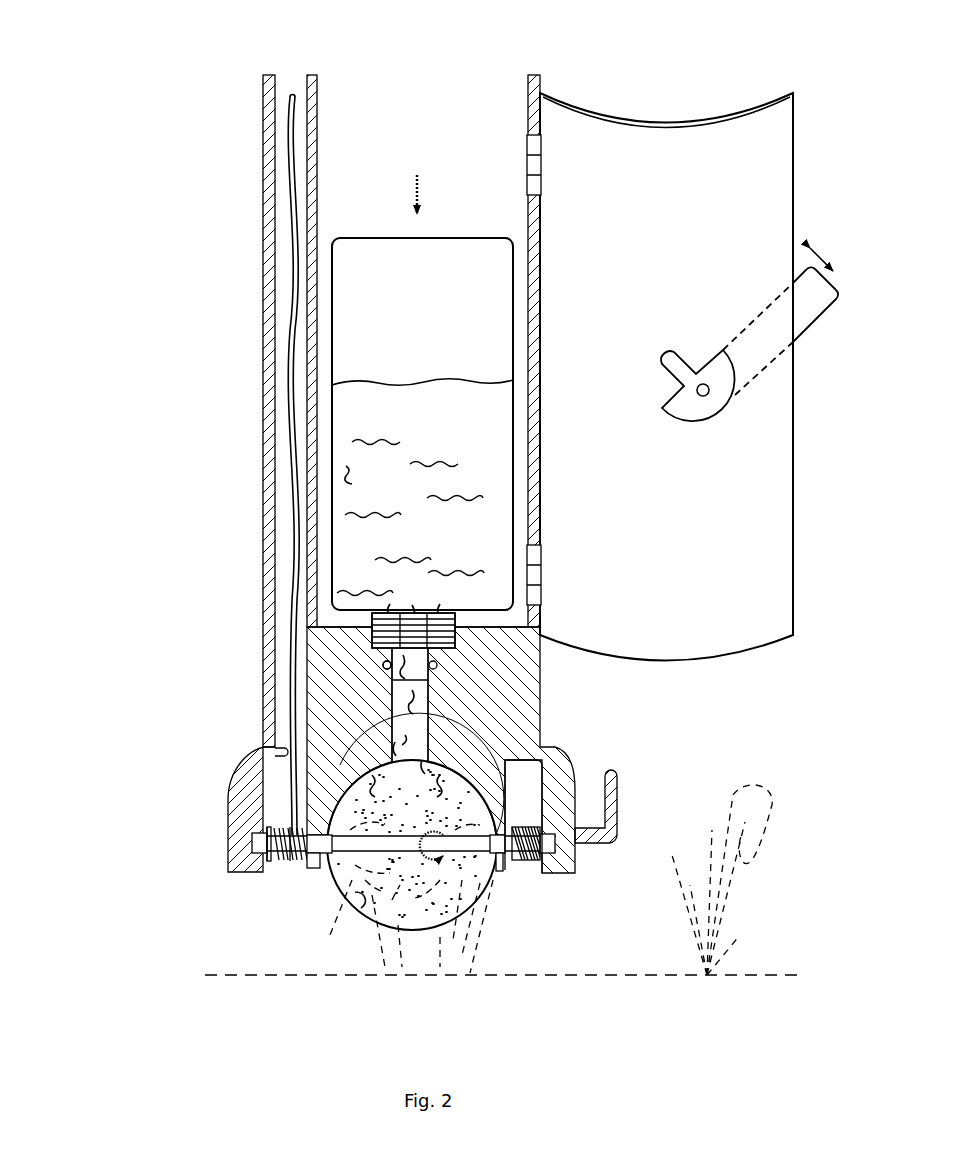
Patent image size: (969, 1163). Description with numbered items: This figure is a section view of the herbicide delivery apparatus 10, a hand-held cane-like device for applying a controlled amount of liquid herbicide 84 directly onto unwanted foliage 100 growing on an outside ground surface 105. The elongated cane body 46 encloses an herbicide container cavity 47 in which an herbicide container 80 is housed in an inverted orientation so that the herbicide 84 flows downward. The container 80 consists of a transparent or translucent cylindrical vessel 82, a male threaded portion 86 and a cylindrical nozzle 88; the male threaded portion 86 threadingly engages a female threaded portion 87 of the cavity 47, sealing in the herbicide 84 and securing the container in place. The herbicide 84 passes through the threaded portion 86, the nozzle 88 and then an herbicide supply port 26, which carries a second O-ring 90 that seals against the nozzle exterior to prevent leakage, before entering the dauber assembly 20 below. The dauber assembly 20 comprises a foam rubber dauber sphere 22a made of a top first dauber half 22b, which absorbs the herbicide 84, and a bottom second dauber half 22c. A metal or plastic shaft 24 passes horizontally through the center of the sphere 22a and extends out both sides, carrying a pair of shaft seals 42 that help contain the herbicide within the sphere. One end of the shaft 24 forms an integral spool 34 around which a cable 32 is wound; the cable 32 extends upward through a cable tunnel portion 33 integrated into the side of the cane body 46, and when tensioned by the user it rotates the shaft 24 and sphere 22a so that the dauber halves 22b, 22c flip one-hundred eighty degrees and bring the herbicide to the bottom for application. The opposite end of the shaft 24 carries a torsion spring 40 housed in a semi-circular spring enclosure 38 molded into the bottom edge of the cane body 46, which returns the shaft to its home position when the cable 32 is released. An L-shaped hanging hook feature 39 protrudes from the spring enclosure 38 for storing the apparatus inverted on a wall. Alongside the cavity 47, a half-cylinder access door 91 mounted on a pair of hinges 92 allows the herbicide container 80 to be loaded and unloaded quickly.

The herbicide delivery apparatus 10 is at (137, 146).
The dauber assembly 20 is at (607, 878).
The dauber sphere 22a is at (427, 940).
The first dauber half 22b is at (458, 842).
The second dauber half 22c is at (365, 898).
The shaft 24 is at (258, 843).
The herbicide supply port 26 is at (430, 722).
The cable 32 is at (255, 808).
The cable tunnel portion 33 is at (278, 412).
The spool 34 is at (300, 862).
The spring enclosure 38 is at (560, 760).
The hanging hook feature 39 is at (620, 797).
The torsion spring 40 is at (548, 858).
The shaft seals 42 is at (320, 862).
The cane body 46 is at (540, 447).
The herbicide container cavity 47 is at (474, 178).
The herbicide container 80 is at (326, 320).
The vessel 82 is at (332, 520).
The herbicide 84 is at (345, 470).
The male threaded portion 86 is at (432, 616).
The female threaded portion 87 is at (453, 632).
The nozzle 88 is at (387, 666).
The second O-ring 90 is at (433, 666).
The access door 91 is at (780, 580).
The hinges 92 is at (533, 165).
The unwanted foliage 100 is at (478, 940).
The ground surface 105 is at (262, 978).